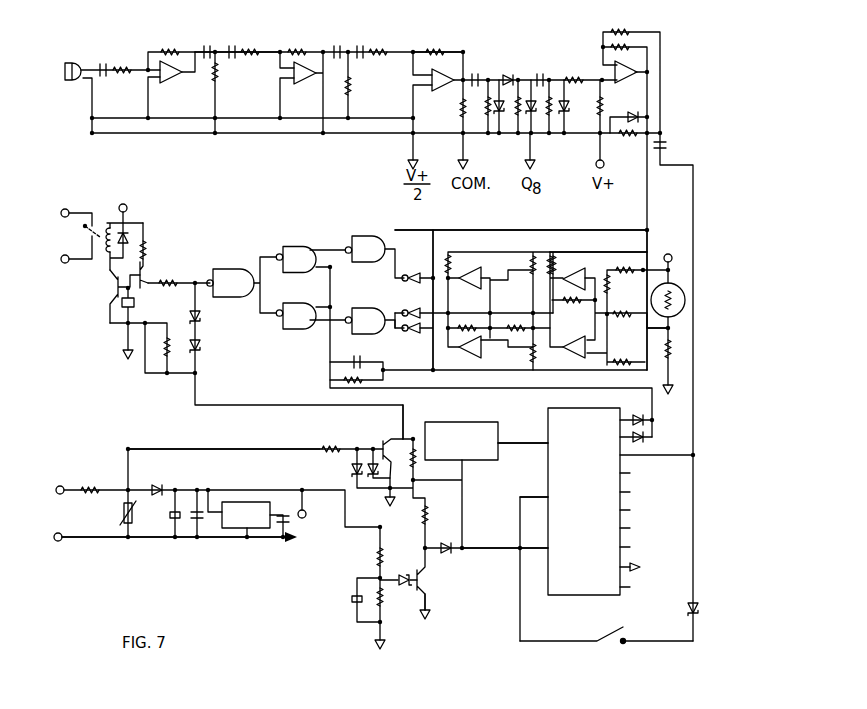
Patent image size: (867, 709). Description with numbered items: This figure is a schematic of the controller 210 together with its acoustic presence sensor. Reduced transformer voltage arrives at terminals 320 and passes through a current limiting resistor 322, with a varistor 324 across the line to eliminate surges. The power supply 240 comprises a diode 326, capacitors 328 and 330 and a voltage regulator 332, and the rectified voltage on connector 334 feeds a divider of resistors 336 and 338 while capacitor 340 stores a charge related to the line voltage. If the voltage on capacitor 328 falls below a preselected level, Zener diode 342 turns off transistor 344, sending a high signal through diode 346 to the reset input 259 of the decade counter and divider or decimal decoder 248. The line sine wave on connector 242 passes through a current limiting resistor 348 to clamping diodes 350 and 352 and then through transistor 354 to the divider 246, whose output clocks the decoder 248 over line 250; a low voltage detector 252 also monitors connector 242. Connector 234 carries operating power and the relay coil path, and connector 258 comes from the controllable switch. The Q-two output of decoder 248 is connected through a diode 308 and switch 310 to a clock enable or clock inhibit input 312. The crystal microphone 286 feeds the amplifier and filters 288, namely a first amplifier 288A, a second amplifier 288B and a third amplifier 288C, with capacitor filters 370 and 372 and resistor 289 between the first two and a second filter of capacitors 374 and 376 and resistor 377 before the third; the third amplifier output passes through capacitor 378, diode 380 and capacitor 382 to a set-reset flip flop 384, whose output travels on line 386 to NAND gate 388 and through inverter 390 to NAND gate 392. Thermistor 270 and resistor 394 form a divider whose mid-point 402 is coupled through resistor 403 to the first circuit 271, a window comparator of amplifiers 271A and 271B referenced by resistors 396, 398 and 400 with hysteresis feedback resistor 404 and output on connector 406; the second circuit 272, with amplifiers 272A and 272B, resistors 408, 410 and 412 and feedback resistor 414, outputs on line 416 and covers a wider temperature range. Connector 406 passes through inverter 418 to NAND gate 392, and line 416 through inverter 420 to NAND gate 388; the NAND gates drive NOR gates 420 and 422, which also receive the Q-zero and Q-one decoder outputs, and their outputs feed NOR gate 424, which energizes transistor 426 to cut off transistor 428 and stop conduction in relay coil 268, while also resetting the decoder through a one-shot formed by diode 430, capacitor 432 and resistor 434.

The controller 210 is at (285, 33).
The connector 234 is at (66, 263).
The power supply 240 is at (233, 552).
The connector 242 is at (193, 448).
The divider 246 is at (476, 421).
The decade counter and divider or decimal decoder 248 is at (590, 598).
The line 250 is at (537, 442).
The low voltage detector 252 is at (434, 601).
The connector 258 is at (76, 192).
The reset input 259 is at (505, 548).
The relay coil 268 is at (103, 222).
The temperature sensor 270 is at (685, 292).
The first circuit 271 is at (614, 240).
The differential amplifier 271A is at (569, 267).
The differential amplifier 271B is at (576, 358).
The second circuit 272 is at (440, 240).
The differential amplifier 272A is at (448, 253).
The differential amplifier 272B is at (478, 358).
The acoustical transducer 286 is at (65, 70).
The amplifier and associated filters 288 is at (465, 51).
The first amplifier 288A is at (172, 82).
The second amplifier 288B is at (281, 78).
The third amplifier 288C is at (428, 82).
The resistor 289 is at (216, 72).
The diode 308 is at (695, 607).
The switch 310 is at (613, 643).
The clock enable or clock inhibit input 312 is at (520, 497).
The terminals 320 is at (52, 494).
The current limiting resistor 322 is at (86, 488).
The varistor 324 is at (123, 518).
The diode 326 is at (154, 485).
The capacitor 328 is at (173, 519).
The capacitor 330 is at (196, 525).
The voltage regulator 332 is at (268, 500).
The connector 334 is at (302, 500).
The resistor 336 is at (376, 556).
The resistor 338 is at (385, 612).
The capacitor 340 is at (352, 599).
The Zener diode 342 is at (404, 576).
The transistor 344 is at (420, 583).
The diode 346 is at (446, 553).
The current limiting resistor 348 is at (321, 448).
The diode 350 is at (352, 470).
The diode 352 is at (371, 463).
The transistor 354 is at (381, 450).
The capacitor filter 370 is at (209, 47).
The capacitor filter 372 is at (242, 41).
The capacitor 374 is at (341, 44).
The capacitor 376 is at (362, 47).
The resistor 377 is at (351, 85).
The capacitor 378 is at (477, 73).
The diode 380 is at (509, 74).
The capacitor 382 is at (541, 74).
The set-reset flip flop 384 is at (615, 76).
The line 386 is at (492, 229).
The NAND gate 388 is at (388, 236).
The inverter 390 is at (419, 334).
The NAND gate 392 is at (378, 309).
The resistor 394 is at (676, 350).
The resistor 396 is at (630, 267).
The resistor 398 is at (625, 286).
The resistor 400 is at (647, 349).
The mid-point 402 is at (669, 328).
The resistor 403 is at (638, 311).
The resistor 404 is at (571, 311).
The connector 406 is at (514, 322).
The resistor 408 is at (530, 272).
The resistor 410 is at (549, 265).
The resistor 412 is at (531, 350).
The resistor 414 is at (466, 322).
The line 416 is at (421, 276).
The inverter 418 is at (402, 326).
The inverter 420 is at (303, 240).
The NOR gate 422 is at (298, 331).
The NOR gate 424 is at (240, 272).
The transistor 426 is at (146, 280).
The transistor 428 is at (117, 290).
The diode 430 is at (202, 316).
The capacitor 432 is at (199, 345).
The resistor 434 is at (170, 338).